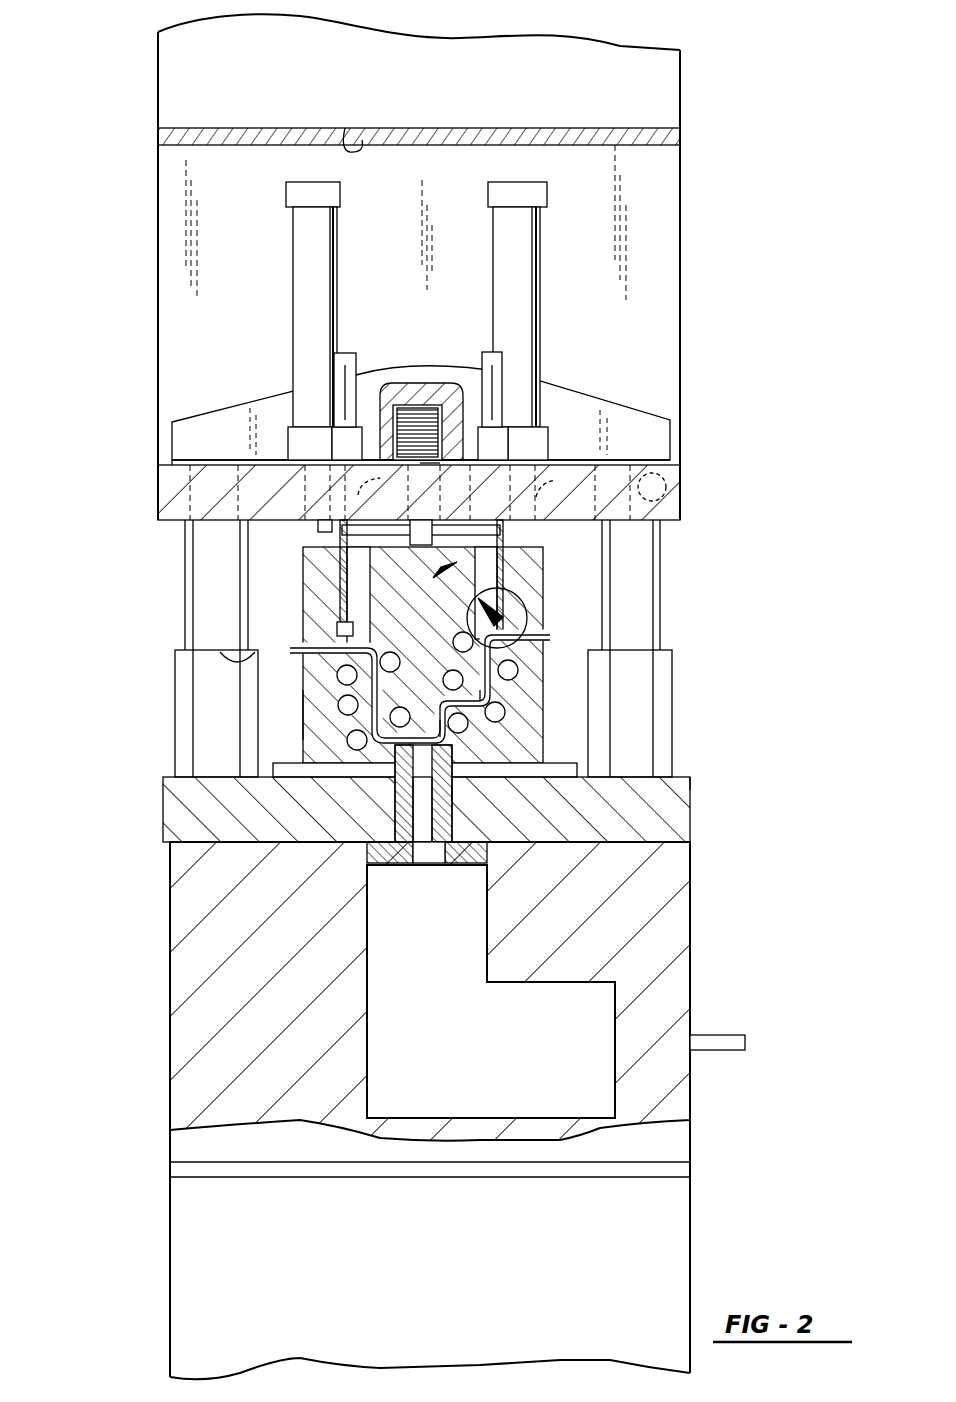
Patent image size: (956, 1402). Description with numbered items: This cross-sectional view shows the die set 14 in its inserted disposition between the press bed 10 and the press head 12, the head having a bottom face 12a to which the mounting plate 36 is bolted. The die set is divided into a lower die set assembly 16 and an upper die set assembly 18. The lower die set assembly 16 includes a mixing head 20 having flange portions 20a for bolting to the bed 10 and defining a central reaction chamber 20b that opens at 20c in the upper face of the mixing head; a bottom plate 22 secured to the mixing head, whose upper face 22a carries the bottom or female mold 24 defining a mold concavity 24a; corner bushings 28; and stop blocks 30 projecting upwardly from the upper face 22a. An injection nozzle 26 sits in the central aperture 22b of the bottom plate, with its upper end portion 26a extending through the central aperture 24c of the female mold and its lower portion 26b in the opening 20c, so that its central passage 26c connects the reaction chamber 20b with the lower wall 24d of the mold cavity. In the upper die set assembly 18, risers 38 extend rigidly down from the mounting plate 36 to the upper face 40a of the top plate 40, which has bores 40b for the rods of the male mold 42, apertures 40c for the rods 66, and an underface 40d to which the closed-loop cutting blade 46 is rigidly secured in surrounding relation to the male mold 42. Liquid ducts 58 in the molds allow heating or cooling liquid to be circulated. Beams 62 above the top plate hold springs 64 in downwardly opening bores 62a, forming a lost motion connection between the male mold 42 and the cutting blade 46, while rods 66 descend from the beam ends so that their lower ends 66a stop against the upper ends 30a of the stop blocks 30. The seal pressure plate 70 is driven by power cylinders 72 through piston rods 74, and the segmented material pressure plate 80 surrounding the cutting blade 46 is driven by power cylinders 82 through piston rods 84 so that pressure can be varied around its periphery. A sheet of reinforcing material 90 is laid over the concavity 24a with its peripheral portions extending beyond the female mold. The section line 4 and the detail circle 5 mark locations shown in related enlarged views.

The bed 10 is at (445, 1283).
The head 12 is at (158, 98).
The bottom face of press head 12a is at (346, 128).
The upper die assembly 14 is at (752, 437).
The lower die set assembly 16 is at (150, 752).
The upper die set assembly 18 is at (150, 352).
The mixing head 20 is at (165, 1045).
The flange portions 20a is at (320, 1160).
The central reaction chamber 20b is at (367, 1035).
The opening 20c is at (385, 842).
The bottom plate 22 is at (163, 830).
The upper face of bottom plate 22a is at (690, 780).
The central aperture of bottom plate 22b is at (400, 805).
The bottom or female mold 24 is at (303, 712).
The mold concavity 24a is at (380, 722).
The central aperture in bottom mold 24c is at (452, 733).
The lower wall of mold cavity 24d is at (452, 712).
The injection nozzle 26 is at (455, 825).
The upper end portion 26a is at (460, 800).
The lower portion 26b is at (470, 866).
The central passage 26c is at (405, 852).
The corner bushings 28 is at (175, 702).
The stop blocks 30 is at (672, 706).
The upper ends of stop blocks 30a is at (662, 637).
The mounting plate 36 is at (425, 132).
The risers 38 is at (456, 233).
The top plate 40 is at (158, 496).
The upper face of top plate 40a is at (170, 462).
The bores in top plate 40b is at (415, 497).
The apertures in top plate 40c is at (666, 487).
The underface of top plate 40d is at (320, 524).
The upper or male mold 42 is at (505, 530).
The cutting blade 46 is at (512, 572).
The liquid ducts 58 is at (393, 652).
The outriggers or beams 62 is at (597, 398).
The downwardly opening bores 62a is at (418, 415).
The springs 64 is at (485, 352).
The rods 66 is at (210, 627).
The lower ends of rods 66a is at (262, 662).
The annular pressure plate 70 is at (352, 582).
The power cylinders 72 is at (345, 355).
The piston rod 74 is at (383, 492).
The annular pressure plate 80 is at (303, 600).
The power cylinders 82 is at (300, 184).
The piston rod 84 is at (563, 491).
The sheet of reinforcing material 90 is at (536, 640).
The section line 4- 4 is at (123, 543).
The detail circle 5 is at (526, 608).